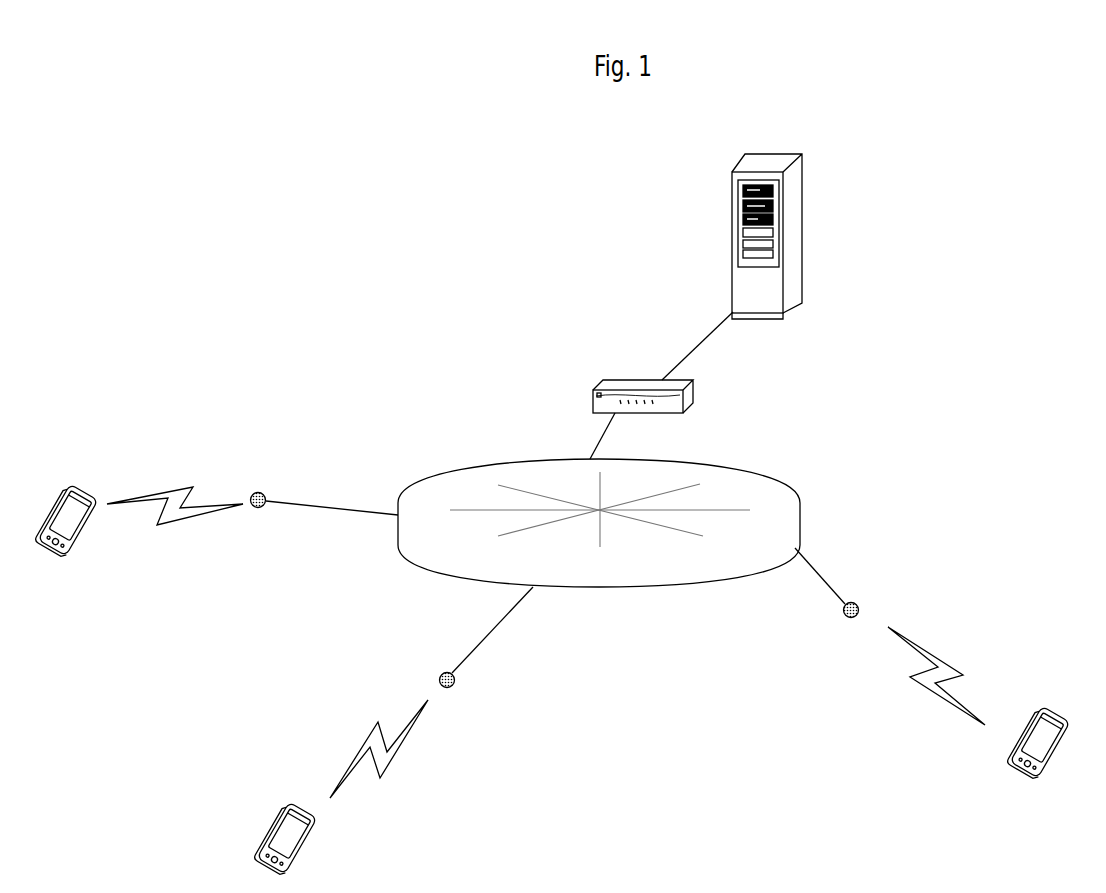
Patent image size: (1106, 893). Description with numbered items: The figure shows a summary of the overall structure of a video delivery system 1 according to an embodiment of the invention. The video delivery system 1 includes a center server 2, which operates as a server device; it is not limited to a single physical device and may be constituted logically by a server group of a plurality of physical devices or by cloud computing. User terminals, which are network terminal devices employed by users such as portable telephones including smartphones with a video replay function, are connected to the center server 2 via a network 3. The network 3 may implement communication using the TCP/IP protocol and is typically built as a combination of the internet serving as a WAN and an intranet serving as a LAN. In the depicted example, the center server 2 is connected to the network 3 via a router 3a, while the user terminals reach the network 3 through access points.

The video delivery system 1 is at (137, 293).
The center server 2 is at (805, 215).
The network 3 is at (466, 422).
The router 3a is at (610, 380).